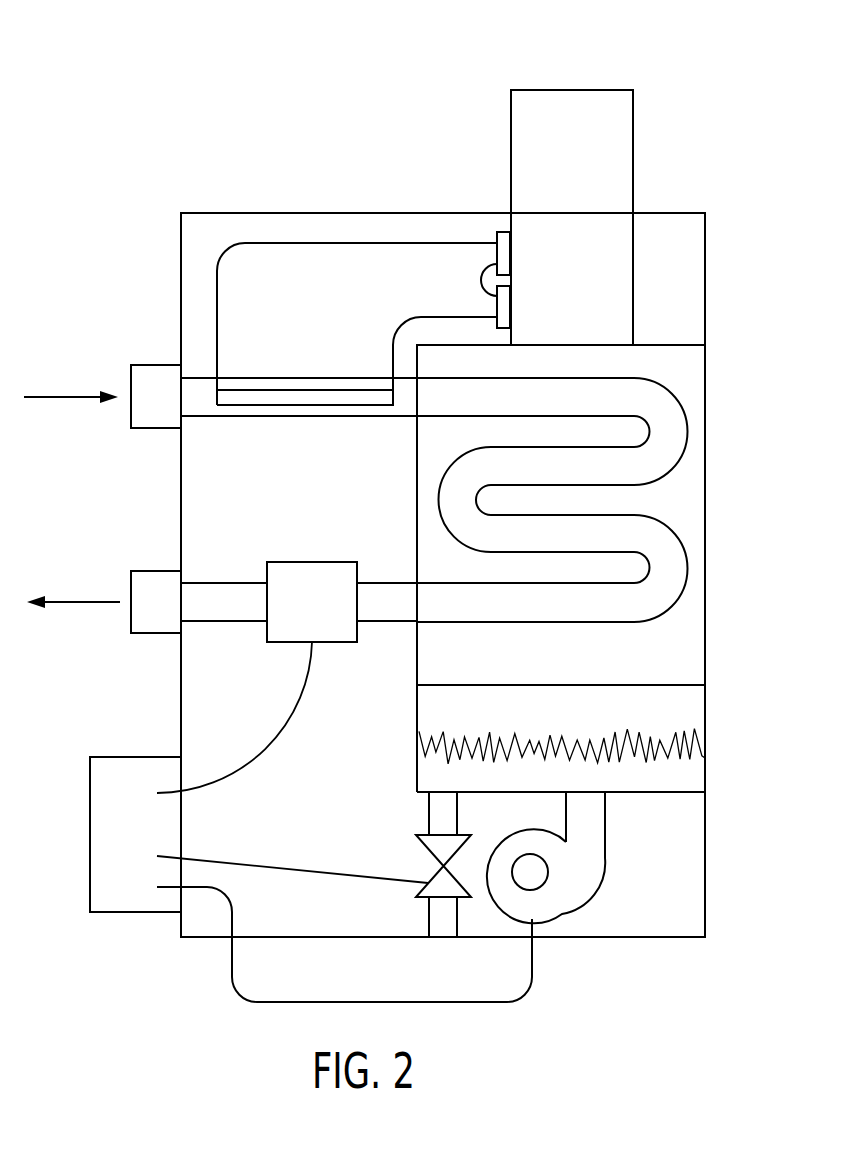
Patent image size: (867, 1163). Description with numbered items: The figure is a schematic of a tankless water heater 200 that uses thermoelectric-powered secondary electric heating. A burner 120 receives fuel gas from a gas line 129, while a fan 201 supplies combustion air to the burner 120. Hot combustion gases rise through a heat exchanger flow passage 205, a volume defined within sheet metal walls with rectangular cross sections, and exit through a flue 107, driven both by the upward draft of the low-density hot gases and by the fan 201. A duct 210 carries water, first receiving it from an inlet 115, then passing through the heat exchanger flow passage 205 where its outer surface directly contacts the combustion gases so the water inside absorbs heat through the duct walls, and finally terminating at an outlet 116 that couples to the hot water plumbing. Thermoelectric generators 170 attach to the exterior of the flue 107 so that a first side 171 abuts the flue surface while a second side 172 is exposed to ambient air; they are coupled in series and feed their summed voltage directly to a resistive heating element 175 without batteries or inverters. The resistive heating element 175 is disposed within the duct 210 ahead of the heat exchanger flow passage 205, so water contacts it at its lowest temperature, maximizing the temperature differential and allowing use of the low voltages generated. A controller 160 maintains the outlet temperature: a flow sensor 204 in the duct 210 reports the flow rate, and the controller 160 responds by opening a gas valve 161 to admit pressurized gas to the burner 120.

The tankless water heater 200 is at (112, 86).
The flue 107 is at (634, 190).
The inlet 115 is at (170, 428).
The outlet 116 is at (143, 571).
The burner 120 is at (742, 748).
The gas line 129 is at (429, 925).
The controller 160 is at (90, 885).
The gas valve 161 is at (422, 840).
The thermoelectric generators 170 is at (507, 230).
The first side 171 is at (513, 253).
The second side 172 is at (497, 253).
The resistive heating element 175 is at (296, 388).
The fan 201 is at (578, 903).
The flow sensor 204 is at (312, 562).
The heat exchanger flow passage 205 is at (680, 651).
The duct 210 is at (683, 453).